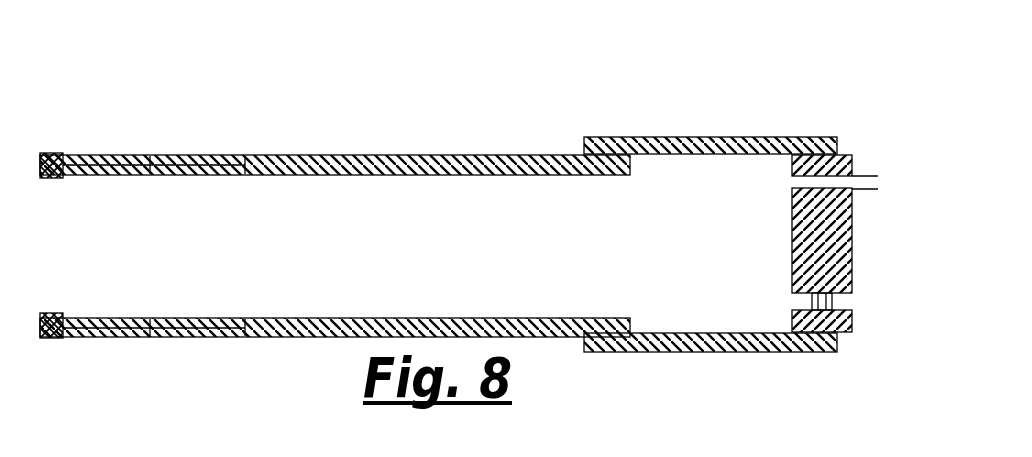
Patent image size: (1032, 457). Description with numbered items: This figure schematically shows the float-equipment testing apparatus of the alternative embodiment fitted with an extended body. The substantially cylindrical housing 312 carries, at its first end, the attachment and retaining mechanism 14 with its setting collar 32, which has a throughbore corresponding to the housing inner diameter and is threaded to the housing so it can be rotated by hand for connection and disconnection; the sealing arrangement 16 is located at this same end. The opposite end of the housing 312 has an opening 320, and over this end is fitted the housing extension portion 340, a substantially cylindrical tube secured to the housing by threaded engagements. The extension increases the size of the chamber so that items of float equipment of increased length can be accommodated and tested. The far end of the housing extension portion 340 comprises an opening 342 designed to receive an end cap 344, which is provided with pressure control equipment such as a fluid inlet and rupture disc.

The attachment and retaining mechanism 14 is at (128, 347).
The sealing arrangement 16 is at (207, 155).
The setting collar 32 is at (130, 155).
The housing 312 is at (404, 155).
The opening 320 is at (638, 250).
The housing extension portion 340 is at (653, 137).
The opening 342 is at (855, 268).
The end cap 344 is at (855, 200).